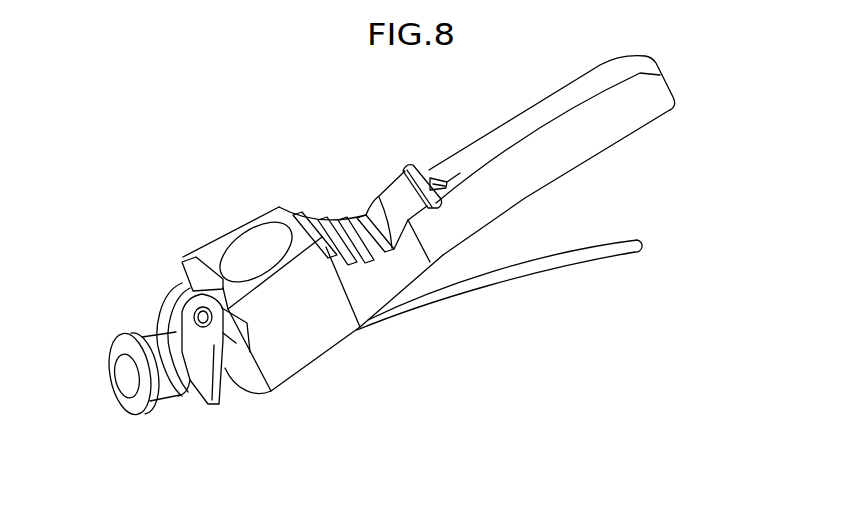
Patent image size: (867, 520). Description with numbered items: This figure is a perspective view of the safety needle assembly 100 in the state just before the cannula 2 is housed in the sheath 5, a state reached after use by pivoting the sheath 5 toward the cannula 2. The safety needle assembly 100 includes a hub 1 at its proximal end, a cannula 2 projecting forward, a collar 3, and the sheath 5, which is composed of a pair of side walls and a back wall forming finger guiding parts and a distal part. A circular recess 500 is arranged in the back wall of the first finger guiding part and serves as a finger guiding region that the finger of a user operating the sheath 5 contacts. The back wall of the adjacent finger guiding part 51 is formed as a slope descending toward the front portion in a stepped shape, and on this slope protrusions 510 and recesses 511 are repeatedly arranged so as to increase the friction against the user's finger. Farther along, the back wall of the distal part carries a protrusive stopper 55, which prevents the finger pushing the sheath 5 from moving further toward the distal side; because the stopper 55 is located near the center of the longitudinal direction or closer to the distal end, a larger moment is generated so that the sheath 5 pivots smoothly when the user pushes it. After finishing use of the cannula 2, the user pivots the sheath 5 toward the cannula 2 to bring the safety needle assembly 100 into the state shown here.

The hub 1 is at (163, 337).
The cannula 2 is at (575, 257).
The collar 3 is at (205, 365).
The sheath 5 is at (268, 207).
The finger guiding part 51 is at (395, 278).
The stopper 55 is at (407, 166).
The safety needle assembly 100 is at (358, 144).
The circular recess 500 is at (233, 248).
The protrusions 510 is at (298, 214).
The recesses 511 is at (318, 219).